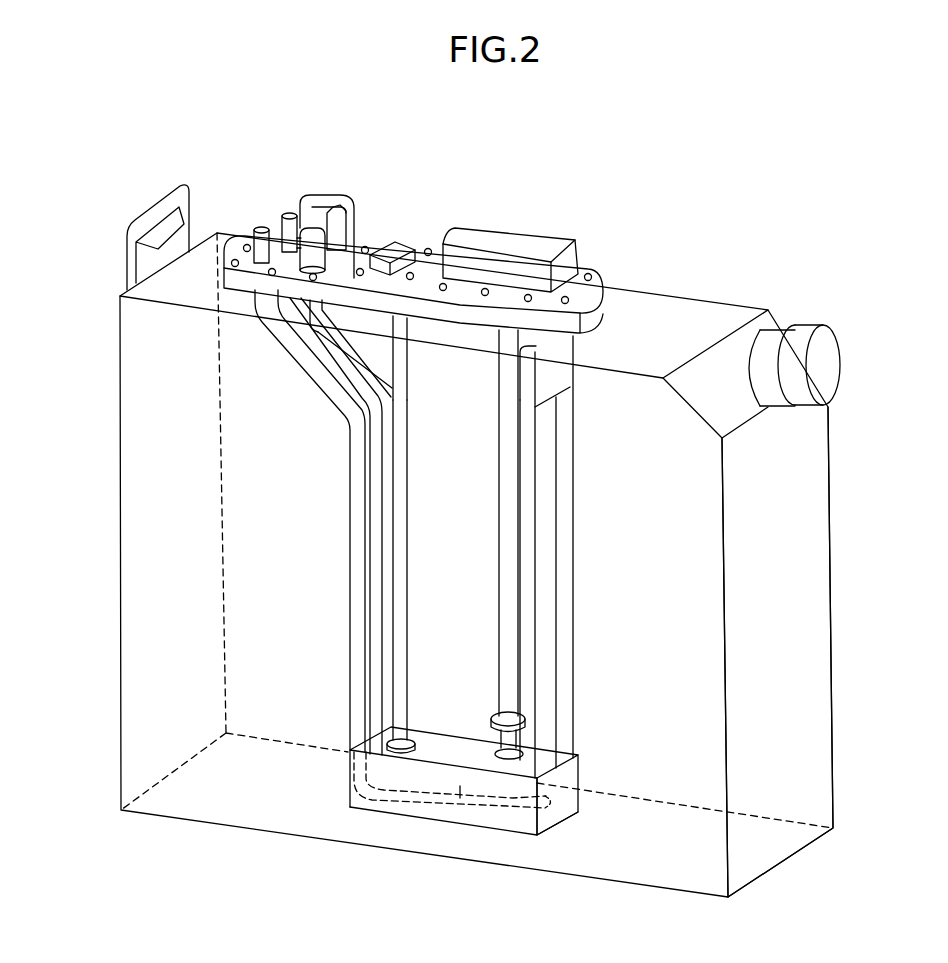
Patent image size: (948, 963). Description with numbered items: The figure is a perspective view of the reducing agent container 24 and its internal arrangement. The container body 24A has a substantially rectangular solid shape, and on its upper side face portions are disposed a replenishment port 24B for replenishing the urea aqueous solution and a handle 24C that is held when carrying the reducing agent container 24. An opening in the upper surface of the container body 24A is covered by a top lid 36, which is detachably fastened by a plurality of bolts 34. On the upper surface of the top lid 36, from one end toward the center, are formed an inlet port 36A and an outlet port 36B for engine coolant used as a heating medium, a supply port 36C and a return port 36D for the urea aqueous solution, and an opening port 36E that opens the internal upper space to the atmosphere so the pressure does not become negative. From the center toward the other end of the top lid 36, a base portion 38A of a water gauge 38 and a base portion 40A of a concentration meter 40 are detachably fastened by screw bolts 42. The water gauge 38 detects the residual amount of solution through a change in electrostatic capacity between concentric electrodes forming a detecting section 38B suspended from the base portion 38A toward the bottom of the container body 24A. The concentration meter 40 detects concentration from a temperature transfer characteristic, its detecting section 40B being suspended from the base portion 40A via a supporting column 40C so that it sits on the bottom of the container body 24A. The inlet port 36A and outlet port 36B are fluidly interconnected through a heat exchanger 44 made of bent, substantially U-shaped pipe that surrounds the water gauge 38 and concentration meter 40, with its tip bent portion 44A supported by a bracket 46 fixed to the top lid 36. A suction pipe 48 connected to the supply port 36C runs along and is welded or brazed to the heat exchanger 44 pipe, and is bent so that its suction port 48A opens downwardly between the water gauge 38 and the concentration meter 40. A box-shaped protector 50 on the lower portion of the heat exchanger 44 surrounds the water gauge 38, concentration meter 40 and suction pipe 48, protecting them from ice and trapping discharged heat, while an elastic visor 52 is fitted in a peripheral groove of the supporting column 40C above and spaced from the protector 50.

The reducing agent container 24 is at (818, 285).
The container body 24A is at (816, 548).
The replenishment port 24B is at (830, 380).
The handle 24C is at (127, 240).
The bolts 34 is at (270, 320).
The top lid 36 is at (236, 292).
The inlet port 36A is at (255, 232).
The outlet port 36B is at (285, 213).
The supply port 36C is at (314, 238).
The return port 36D is at (342, 240).
The opening port 36E is at (348, 192).
The water gauge 38 is at (404, 246).
The base portion of water gauge 38A is at (395, 302).
The detecting section of water gauge 38B is at (405, 480).
The concentration meter 40 is at (580, 237).
The base portion of concentration meter 40A is at (590, 268).
The detecting section of concentration meter 40B is at (514, 828).
The supporting column 40C is at (512, 522).
The screw bolts 42 is at (432, 245).
The heat exchanger 44 is at (350, 553).
The tip bent portion 44A is at (538, 348).
The bracket 46 is at (552, 373).
The suction pipe 48 is at (316, 348).
The suction port 48A is at (450, 803).
The protector 50 is at (389, 812).
The visor 52 is at (502, 715).